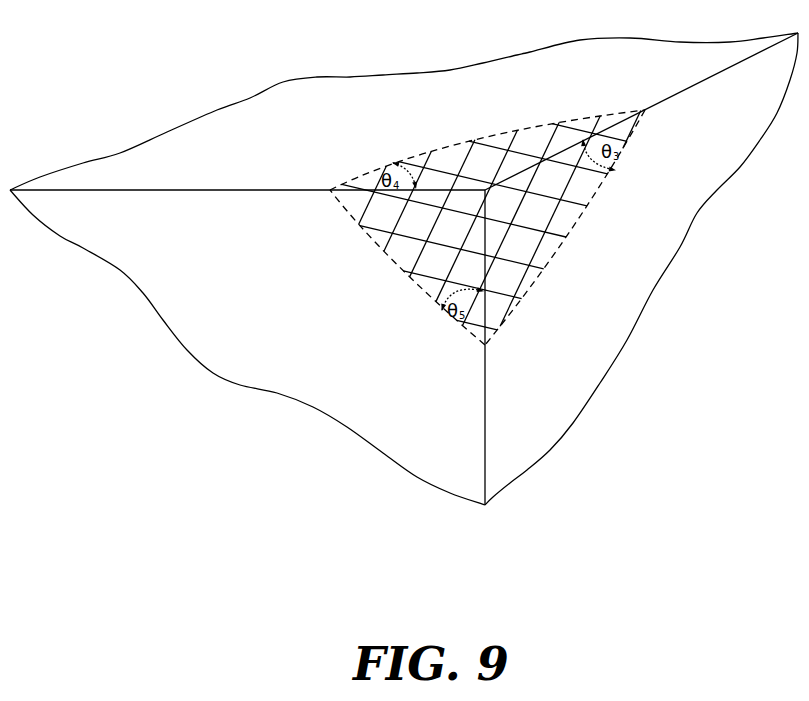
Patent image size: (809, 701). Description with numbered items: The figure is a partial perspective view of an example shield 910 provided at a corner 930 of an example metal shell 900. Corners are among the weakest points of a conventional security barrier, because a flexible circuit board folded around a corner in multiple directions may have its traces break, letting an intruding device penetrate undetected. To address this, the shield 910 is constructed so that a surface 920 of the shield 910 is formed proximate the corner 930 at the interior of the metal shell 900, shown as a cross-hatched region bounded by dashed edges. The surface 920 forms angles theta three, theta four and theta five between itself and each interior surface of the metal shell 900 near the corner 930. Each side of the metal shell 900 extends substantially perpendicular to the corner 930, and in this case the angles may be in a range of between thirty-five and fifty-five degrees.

The metal shell 900 is at (118, 163).
The shield 910 is at (428, 297).
The surface 920 is at (372, 177).
The corner 930 is at (486, 192).